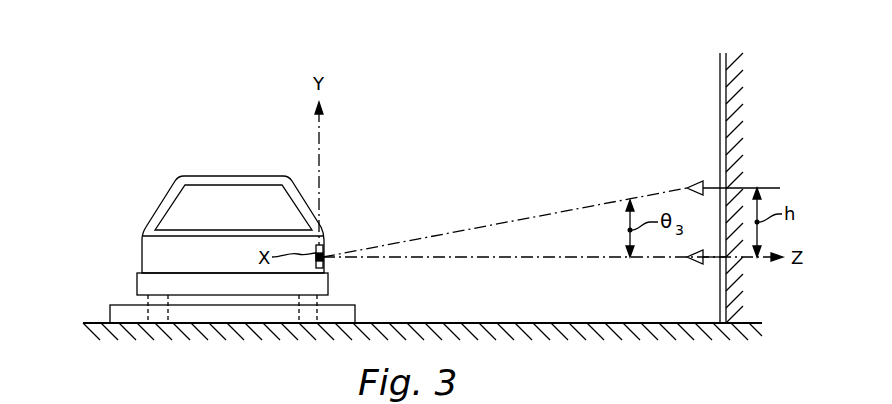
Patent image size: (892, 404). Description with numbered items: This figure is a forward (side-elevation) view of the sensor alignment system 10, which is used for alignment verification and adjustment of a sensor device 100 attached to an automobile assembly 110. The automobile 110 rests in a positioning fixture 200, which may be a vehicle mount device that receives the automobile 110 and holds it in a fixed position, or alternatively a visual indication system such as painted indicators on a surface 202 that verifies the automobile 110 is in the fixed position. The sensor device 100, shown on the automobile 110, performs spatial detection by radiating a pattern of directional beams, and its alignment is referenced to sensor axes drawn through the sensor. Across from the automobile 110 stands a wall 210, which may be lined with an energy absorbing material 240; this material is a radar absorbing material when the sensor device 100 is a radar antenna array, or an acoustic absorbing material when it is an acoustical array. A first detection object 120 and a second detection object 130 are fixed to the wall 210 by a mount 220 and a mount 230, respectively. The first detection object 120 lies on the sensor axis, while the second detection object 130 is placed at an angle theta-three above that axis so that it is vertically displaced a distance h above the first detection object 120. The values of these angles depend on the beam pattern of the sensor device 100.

The sensor alignment system 10 is at (115, 134).
The automobile assembly 110 is at (215, 176).
The sensor device 100 is at (323, 262).
The positioning fixture 200 is at (117, 305).
The surface 202 is at (453, 323).
The wall 210 is at (735, 64).
The energy absorbing material 240 is at (720, 97).
The mount 230 is at (704, 186).
The second detection object 130 is at (690, 184).
The first detection object 120 is at (694, 264).
The mount 220 is at (717, 260).